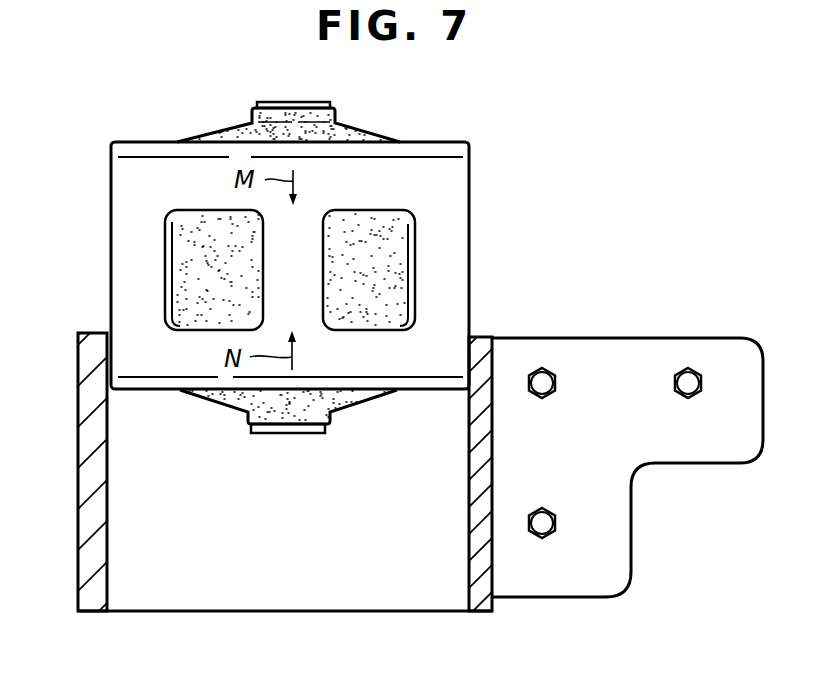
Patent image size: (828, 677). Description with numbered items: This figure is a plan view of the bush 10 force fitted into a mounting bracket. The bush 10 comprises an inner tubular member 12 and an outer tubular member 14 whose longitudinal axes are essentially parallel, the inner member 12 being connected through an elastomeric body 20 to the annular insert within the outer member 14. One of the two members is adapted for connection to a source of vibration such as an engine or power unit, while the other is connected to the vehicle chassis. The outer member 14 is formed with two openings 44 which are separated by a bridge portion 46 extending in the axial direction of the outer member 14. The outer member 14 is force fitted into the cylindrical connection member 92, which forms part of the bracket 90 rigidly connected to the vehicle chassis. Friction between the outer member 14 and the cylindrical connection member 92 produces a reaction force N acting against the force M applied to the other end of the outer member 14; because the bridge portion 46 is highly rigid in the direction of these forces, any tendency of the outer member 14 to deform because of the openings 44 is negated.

The bush 10 is at (479, 140).
The inner tubular member 12 is at (297, 101).
The outer tubular member 14 is at (453, 188).
The elastomeric body 20 is at (223, 136).
The openings 44 is at (187, 211).
The bridge portion 46 is at (292, 248).
The bracket 90 is at (566, 332).
The cylindrical connection member 92 is at (467, 614).